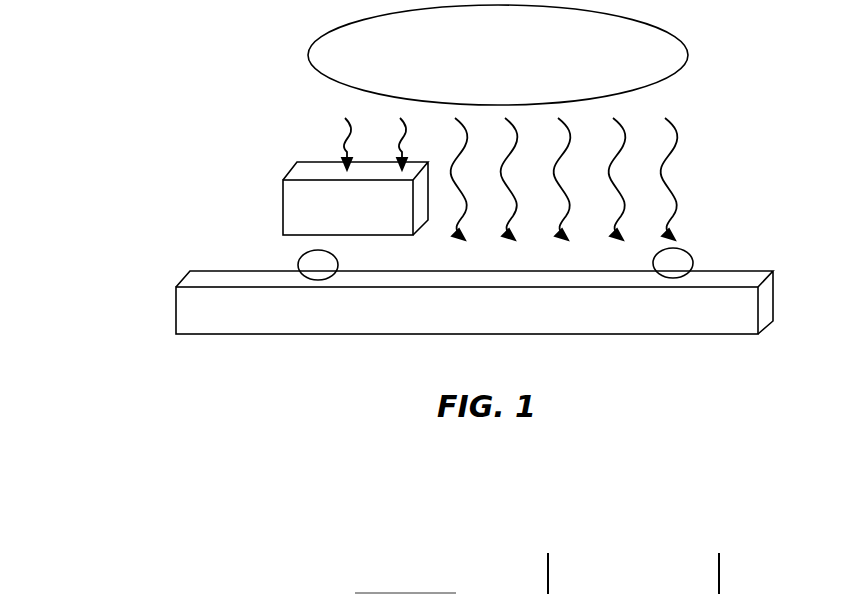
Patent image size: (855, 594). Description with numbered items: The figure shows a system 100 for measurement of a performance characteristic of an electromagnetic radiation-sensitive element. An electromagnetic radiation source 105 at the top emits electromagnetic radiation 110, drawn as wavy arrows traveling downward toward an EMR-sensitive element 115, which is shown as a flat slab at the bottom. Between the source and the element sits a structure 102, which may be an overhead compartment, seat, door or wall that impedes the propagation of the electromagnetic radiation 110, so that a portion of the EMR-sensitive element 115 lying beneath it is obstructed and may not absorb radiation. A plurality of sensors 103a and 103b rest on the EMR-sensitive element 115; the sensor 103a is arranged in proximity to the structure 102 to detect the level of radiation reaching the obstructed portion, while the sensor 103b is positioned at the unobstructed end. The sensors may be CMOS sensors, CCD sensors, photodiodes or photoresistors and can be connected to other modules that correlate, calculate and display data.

The system 100 is at (168, 90).
The electromagnetic radiation source 105 is at (498, 55).
The electromagnetic radiation 110 is at (710, 107).
The structure 102 is at (355, 198).
The electromagnetic radiation-sensitive element 115 is at (474, 302).
The sensor 103a is at (312, 262).
The sensor 103b is at (683, 262).